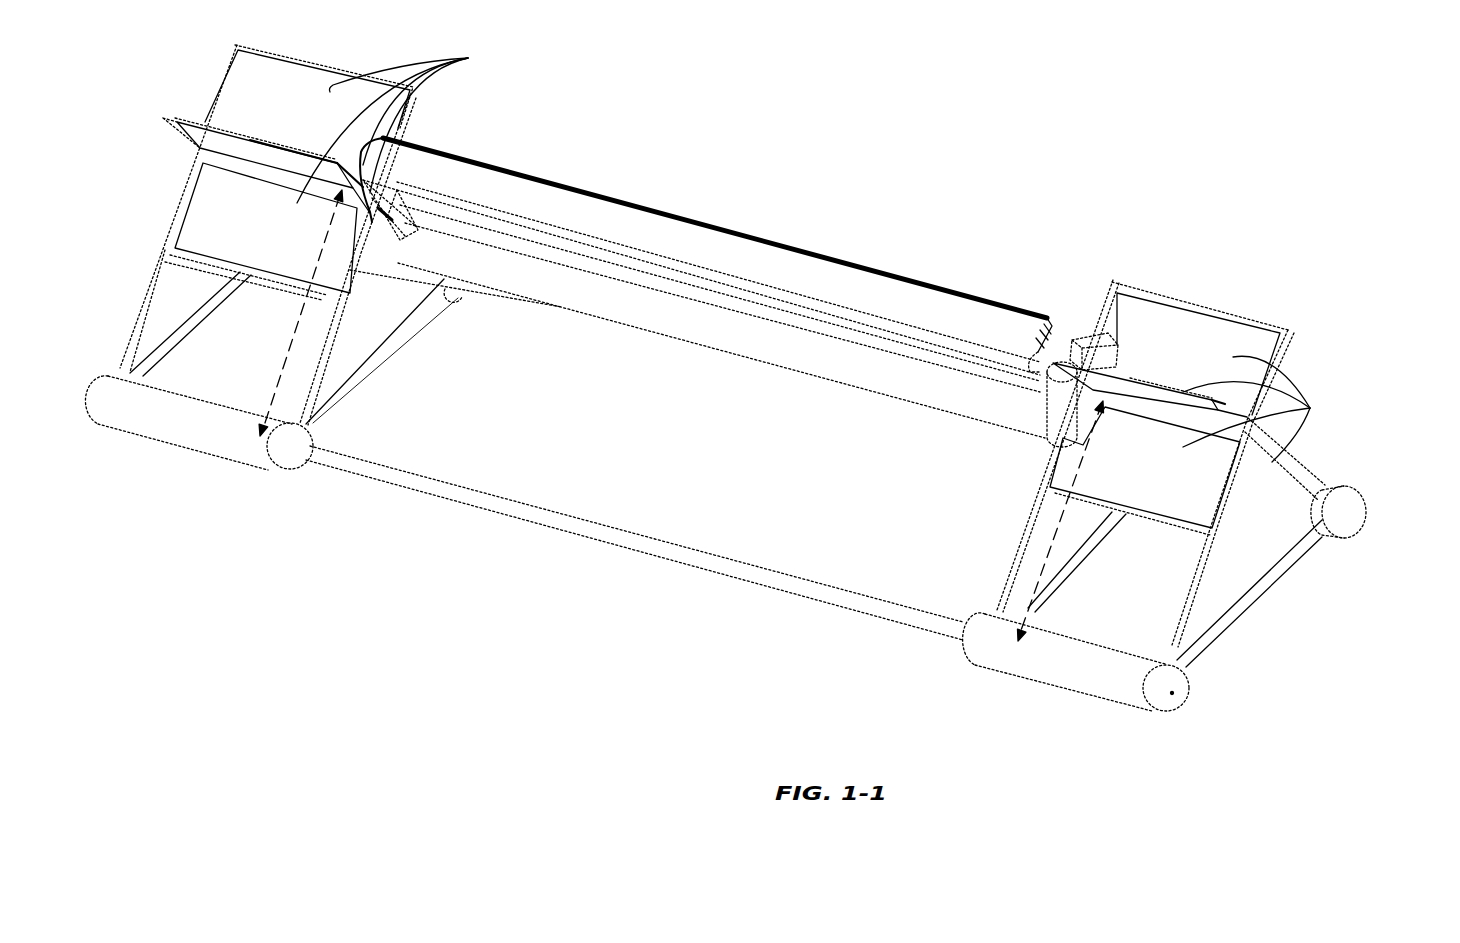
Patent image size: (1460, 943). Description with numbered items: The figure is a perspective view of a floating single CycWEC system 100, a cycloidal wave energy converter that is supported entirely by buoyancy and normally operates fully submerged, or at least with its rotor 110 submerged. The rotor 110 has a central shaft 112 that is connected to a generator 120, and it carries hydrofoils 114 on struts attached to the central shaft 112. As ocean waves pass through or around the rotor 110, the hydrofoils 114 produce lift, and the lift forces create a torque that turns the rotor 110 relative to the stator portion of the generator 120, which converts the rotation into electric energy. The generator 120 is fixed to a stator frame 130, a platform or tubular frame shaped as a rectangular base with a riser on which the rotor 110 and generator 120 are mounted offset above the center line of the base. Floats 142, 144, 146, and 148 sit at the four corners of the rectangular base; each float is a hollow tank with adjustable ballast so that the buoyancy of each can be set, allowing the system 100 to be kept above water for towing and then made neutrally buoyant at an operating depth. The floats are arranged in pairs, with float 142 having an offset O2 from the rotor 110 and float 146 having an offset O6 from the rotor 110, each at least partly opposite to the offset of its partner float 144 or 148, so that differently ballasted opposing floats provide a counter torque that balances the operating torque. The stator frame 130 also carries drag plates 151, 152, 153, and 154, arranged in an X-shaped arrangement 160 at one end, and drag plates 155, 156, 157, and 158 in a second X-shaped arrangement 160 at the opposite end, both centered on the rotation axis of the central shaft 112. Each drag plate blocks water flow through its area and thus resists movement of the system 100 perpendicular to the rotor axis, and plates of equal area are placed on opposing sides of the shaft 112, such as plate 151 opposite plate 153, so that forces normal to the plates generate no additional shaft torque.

The CycWEC system 100 is at (1157, 157).
The rotor 110 is at (802, 212).
The central shaft 112 is at (792, 312).
The hydrofoils 114 is at (718, 278).
The generator 120 is at (1062, 415).
The stator frame 130 is at (548, 527).
The float 142 is at (1142, 611).
The float 144 is at (1355, 507).
The float 146 is at (285, 460).
The float 148 is at (463, 292).
The drag plate 151 is at (1145, 471).
The drag plate 152 is at (1127, 383).
The drag plate 153 is at (1200, 348).
The drag plate 154 is at (1272, 461).
The drag plate 155 is at (266, 228).
The drag plate 156 is at (250, 155).
The drag plate 157 is at (309, 86).
The drag plate 158 is at (373, 220).
The X-shaped arrangement 160 is at (825, 254).
The offset O2 is at (1030, 597).
The offset O6 is at (280, 377).